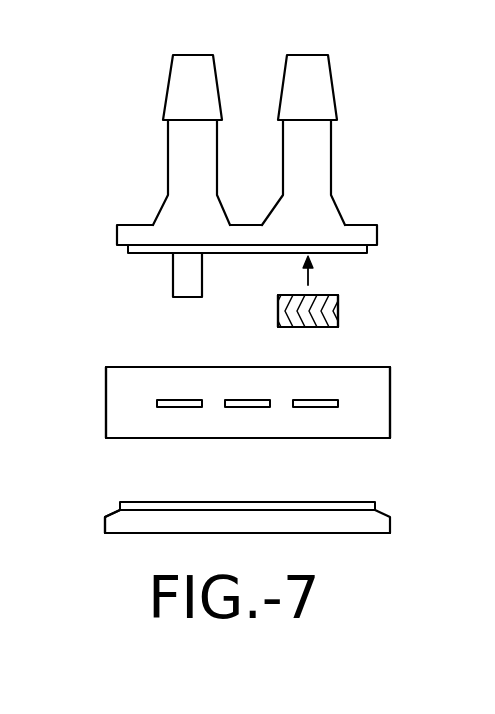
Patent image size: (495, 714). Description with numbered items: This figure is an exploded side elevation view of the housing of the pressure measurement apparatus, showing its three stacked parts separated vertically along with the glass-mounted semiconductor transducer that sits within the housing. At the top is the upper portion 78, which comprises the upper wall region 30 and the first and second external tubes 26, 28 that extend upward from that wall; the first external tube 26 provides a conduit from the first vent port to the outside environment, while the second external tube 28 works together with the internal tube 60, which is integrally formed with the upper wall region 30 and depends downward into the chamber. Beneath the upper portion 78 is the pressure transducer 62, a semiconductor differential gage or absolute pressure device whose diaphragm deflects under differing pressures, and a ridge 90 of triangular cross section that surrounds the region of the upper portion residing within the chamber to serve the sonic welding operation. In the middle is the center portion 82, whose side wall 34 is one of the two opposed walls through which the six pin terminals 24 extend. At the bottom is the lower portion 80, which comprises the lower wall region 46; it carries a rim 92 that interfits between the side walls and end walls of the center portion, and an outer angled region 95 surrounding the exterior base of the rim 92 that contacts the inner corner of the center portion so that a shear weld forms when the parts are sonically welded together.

The pin terminals 24 is at (170, 400).
The first external tube 26 is at (331, 178).
The second external tube 28 is at (168, 170).
The upper wall region 30 is at (253, 225).
The side wall 34 is at (115, 422).
The lower wall region 46 is at (318, 533).
The internal tube 60 is at (173, 288).
The pressure transducer 62 is at (278, 320).
The upper portion 78 is at (408, 231).
The lower portion 80 is at (406, 521).
The center portion 82 is at (406, 399).
The ridge 90 is at (338, 300).
The rim 92 is at (367, 249).
The outer angled region 95 is at (110, 512).